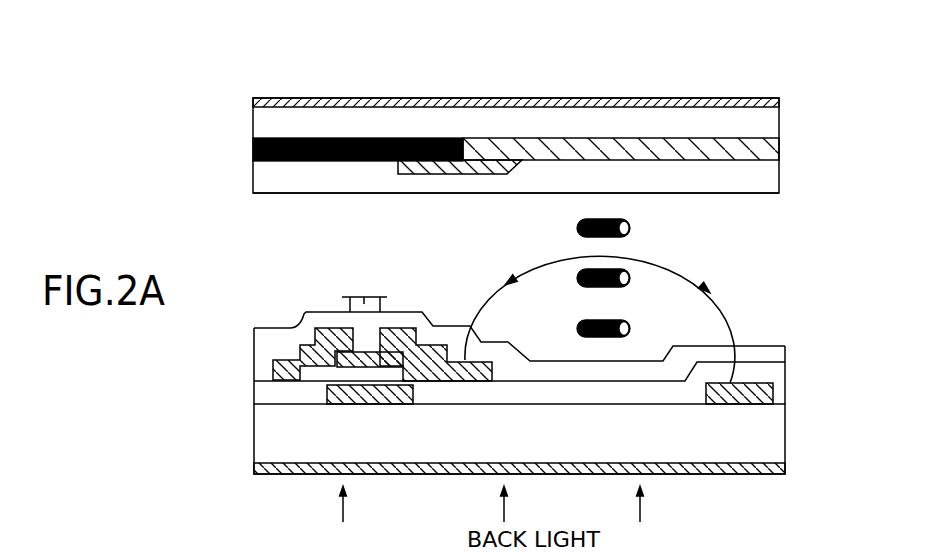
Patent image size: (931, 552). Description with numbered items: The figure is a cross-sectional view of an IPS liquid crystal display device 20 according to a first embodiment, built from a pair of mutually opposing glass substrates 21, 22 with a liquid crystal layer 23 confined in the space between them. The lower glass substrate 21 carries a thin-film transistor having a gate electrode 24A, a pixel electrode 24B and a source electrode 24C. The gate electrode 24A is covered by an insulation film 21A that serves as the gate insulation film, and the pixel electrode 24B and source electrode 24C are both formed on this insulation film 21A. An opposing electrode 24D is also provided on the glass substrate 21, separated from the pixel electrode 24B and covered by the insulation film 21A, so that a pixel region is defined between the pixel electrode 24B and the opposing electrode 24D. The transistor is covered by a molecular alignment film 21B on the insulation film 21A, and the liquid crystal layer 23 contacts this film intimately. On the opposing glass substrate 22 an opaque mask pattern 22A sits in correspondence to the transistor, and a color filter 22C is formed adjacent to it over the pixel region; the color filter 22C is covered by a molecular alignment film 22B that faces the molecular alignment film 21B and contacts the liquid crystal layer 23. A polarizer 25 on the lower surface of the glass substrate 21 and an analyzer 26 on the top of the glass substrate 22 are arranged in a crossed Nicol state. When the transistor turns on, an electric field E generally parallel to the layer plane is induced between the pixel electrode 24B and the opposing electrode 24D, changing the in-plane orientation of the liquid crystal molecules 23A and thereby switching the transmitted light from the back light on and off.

The IPS liquid crystal display device 20 is at (651, 28).
The glass substrate 21 is at (785, 446).
The insulation film 21A is at (583, 396).
The molecular alignment film 21B is at (264, 354).
The glass substrate 22 is at (779, 126).
The opaque mask pattern 22A is at (270, 138).
The molecular alignment film 22B is at (333, 186).
The color filter 22C is at (524, 160).
The liquid crystal layer 23 is at (785, 195).
The liquid crystal molecules 23A is at (620, 220).
The gate electrode 24A is at (386, 405).
The pixel electrode 24B is at (409, 327).
The source electrode 24C is at (300, 344).
The opposing electrode 24D is at (730, 405).
The polarizer 25 is at (300, 475).
The analyzer 26 is at (727, 97).
The electric field E is at (720, 303).